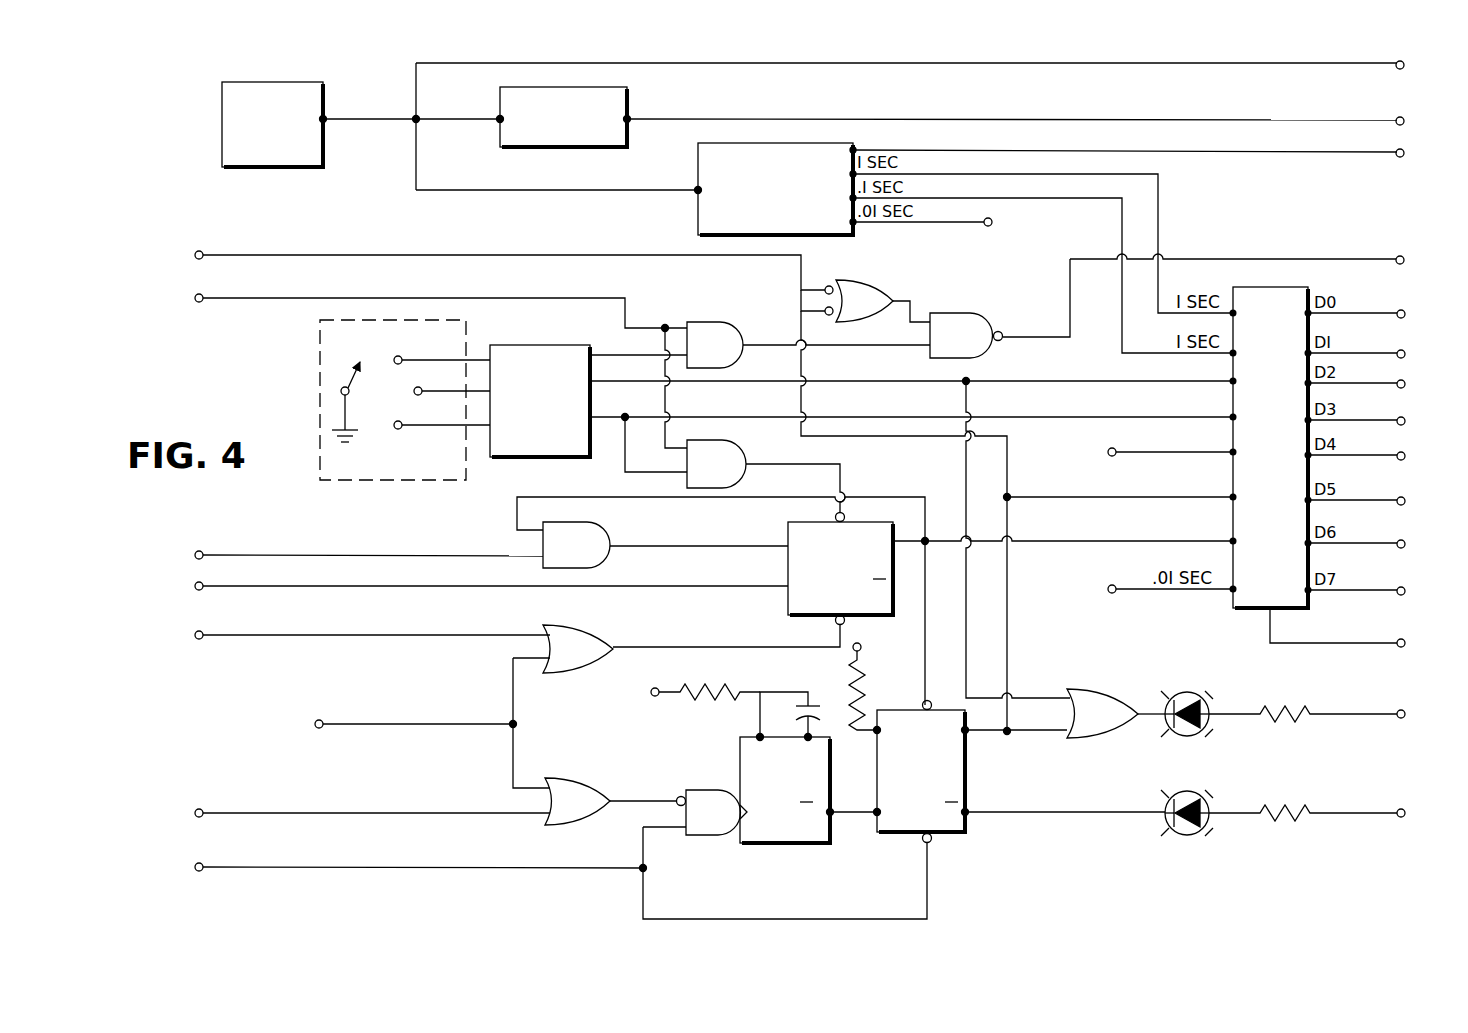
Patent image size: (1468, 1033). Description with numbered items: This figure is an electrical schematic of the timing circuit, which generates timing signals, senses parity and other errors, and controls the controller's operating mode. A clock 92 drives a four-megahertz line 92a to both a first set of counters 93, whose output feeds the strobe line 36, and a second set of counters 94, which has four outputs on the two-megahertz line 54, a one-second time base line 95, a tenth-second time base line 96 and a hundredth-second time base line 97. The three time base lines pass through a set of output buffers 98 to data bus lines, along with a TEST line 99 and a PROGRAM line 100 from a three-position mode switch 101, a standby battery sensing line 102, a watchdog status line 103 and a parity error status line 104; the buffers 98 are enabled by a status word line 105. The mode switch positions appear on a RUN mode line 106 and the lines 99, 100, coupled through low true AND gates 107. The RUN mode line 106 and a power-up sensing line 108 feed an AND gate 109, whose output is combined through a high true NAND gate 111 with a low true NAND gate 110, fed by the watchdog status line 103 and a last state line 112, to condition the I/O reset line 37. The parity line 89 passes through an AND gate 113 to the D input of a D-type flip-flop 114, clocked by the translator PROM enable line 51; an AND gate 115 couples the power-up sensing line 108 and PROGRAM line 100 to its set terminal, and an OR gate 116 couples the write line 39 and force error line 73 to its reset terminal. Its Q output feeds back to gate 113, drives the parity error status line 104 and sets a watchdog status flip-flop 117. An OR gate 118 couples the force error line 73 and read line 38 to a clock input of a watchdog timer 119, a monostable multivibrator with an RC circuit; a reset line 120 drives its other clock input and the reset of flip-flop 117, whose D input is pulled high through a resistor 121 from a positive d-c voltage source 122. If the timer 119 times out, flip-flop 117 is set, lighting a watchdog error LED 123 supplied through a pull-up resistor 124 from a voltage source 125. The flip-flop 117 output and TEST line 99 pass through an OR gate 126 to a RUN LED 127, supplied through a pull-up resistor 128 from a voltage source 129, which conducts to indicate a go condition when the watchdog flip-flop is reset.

The strobe line 36 is at (820, 120).
The I/O reset line 37 is at (1405, 264).
The read line 38 is at (218, 815).
The write line 39 is at (310, 636).
The translator PROM enable line 51 is at (651, 587).
The two-megahertz line 54 is at (995, 152).
The force error line 73 is at (358, 724).
The parity line 89 is at (303, 556).
The clock 92 is at (325, 97).
The four-megahertz line 92a is at (814, 63).
The first set of counters 93 is at (500, 99).
The second set of counters 94 is at (698, 220).
The 1-second time base line 95 is at (1158, 186).
The 0.1-second time base line 96 is at (1100, 199).
The 0.01-second time base line 97 is at (990, 226).
The output buffers 98 is at (1280, 556).
The TEST line 99 is at (1052, 383).
The PROGRAM line 100 is at (1060, 419).
The three-position mode switch 101 is at (436, 465).
The standby battery sensing line 102 is at (1110, 456).
The watchdog status line 103 is at (1114, 499).
The parity error status line 104 is at (1100, 543).
The status word line 105 is at (1399, 640).
The RUN mode line 106 is at (630, 353).
The low true AND gates 107 is at (550, 448).
The power-up sensing line 108 is at (447, 299).
The AND gate 109 is at (722, 357).
The low true NAND gate 110 is at (870, 311).
The high true NAND gate 111 is at (962, 347).
The last state line 112 is at (432, 257).
The AND gate 113 is at (578, 557).
The D-type flip-flop 114 is at (806, 617).
The AND gate 115 is at (722, 475).
The OR gate 116 is at (584, 661).
The watchdog status flip-flop 117 is at (950, 842).
The OR gate 118 is at (584, 813).
The watchdog timer 119 is at (738, 750).
The reset line 120 is at (277, 869).
The resistor 121 is at (862, 698).
The source of positive d-c voltage 122 is at (862, 652).
The watchdog error LED 123 is at (1190, 791).
The pull-up resistor 124 is at (1272, 811).
The source of positive d-c voltage 125 is at (1405, 810).
The OR gate 126 is at (1108, 726).
The RUN LED 127 is at (1185, 690).
The pull-up resistor 128 is at (1272, 712).
The positive d-c voltage source 129 is at (1405, 710).